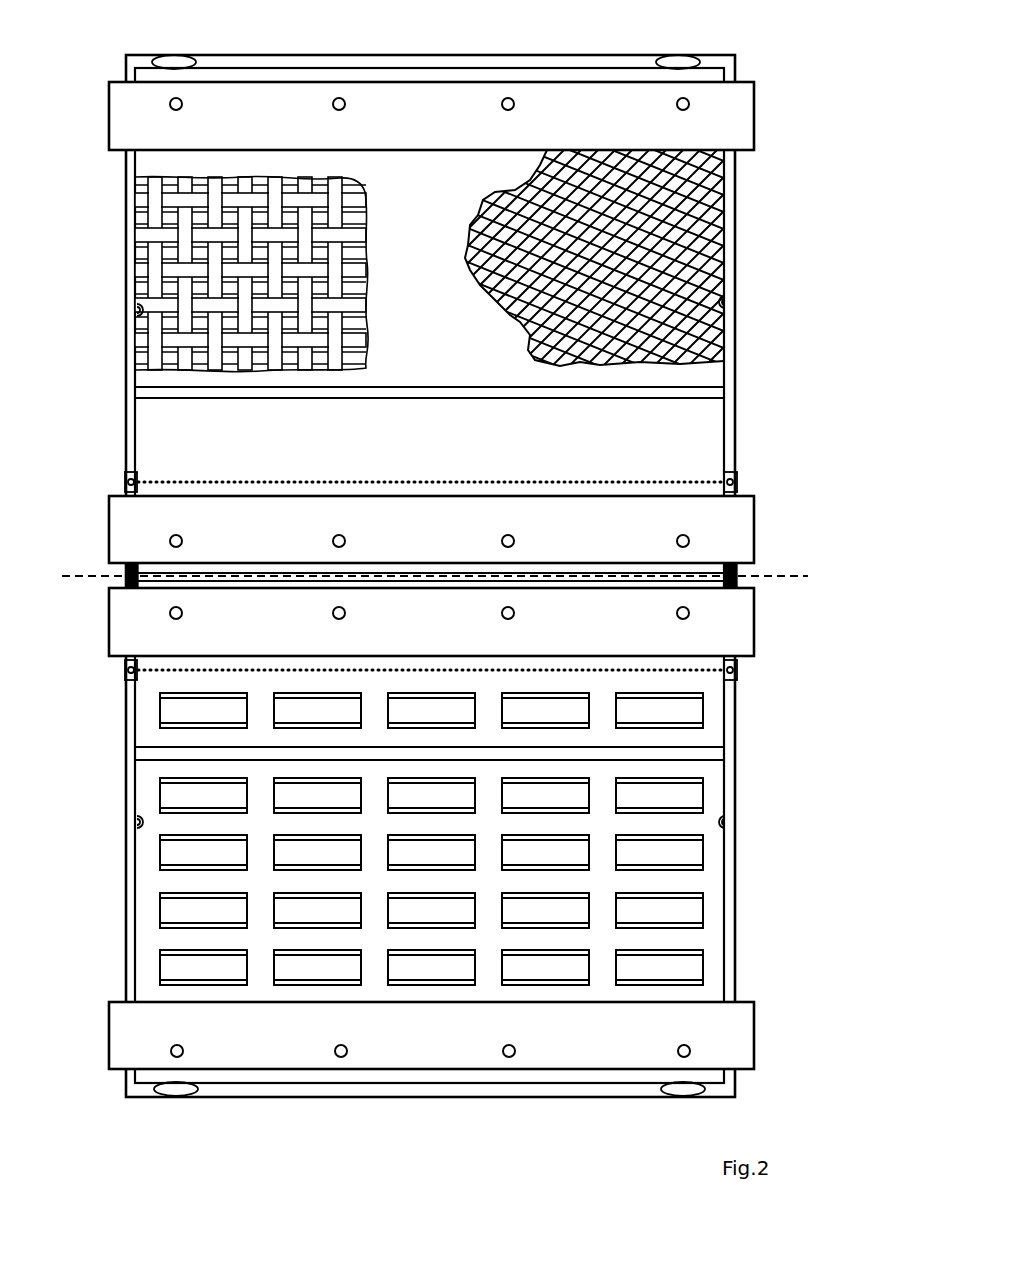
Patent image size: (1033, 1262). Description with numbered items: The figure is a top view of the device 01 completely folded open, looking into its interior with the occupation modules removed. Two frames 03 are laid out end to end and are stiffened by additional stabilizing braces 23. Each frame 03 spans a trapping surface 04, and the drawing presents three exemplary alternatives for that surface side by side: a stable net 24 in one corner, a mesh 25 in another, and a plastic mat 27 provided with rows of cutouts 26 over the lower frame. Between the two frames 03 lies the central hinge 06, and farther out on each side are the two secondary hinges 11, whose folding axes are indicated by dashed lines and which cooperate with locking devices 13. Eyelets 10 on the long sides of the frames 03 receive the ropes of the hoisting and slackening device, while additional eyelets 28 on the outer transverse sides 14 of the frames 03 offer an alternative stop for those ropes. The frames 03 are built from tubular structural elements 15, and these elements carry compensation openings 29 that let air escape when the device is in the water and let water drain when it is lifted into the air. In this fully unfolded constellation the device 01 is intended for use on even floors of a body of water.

The device 01 is at (786, 106).
The frame 03 is at (137, 417).
The trapping surface 04 is at (505, 511).
The central hinge 06 is at (128, 574).
The eyelet 10 is at (140, 313).
The secondary hinge 11 is at (130, 483).
The locking device 13 is at (431, 576).
The outer transverse side 14 is at (275, 63).
The tubular structural element 15 is at (155, 124).
The stabilizing brace 23 is at (226, 393).
The net 24 is at (658, 258).
The mesh 25 is at (185, 240).
The cutout 26 is at (295, 851).
The plastic mat 27 is at (431, 839).
The additional eyelet 28 is at (176, 62).
The compensation opening 29 is at (502, 103).